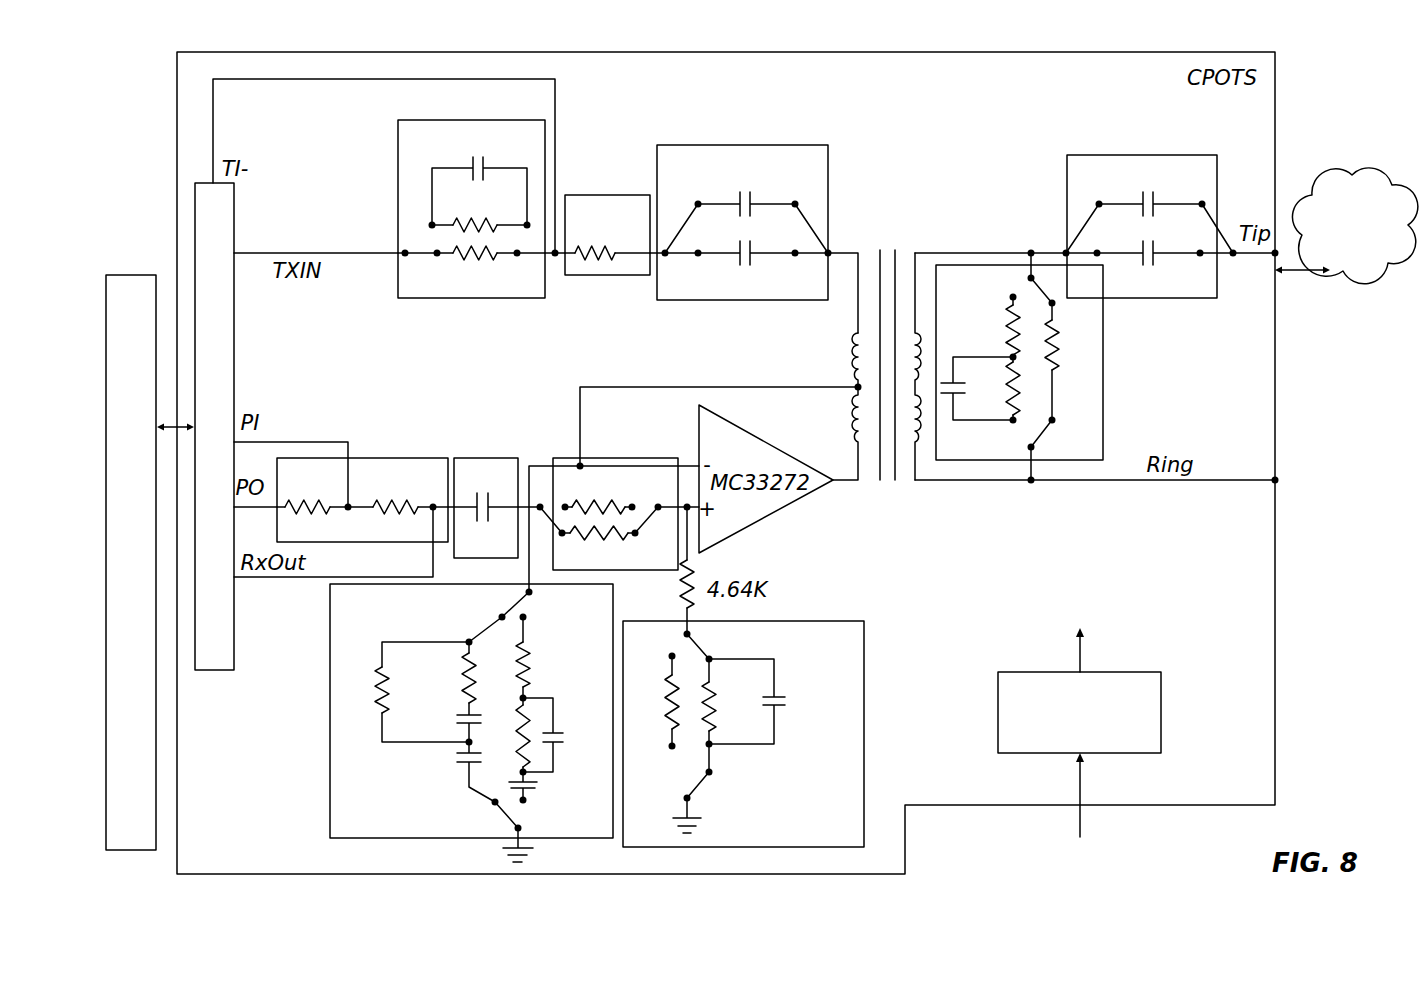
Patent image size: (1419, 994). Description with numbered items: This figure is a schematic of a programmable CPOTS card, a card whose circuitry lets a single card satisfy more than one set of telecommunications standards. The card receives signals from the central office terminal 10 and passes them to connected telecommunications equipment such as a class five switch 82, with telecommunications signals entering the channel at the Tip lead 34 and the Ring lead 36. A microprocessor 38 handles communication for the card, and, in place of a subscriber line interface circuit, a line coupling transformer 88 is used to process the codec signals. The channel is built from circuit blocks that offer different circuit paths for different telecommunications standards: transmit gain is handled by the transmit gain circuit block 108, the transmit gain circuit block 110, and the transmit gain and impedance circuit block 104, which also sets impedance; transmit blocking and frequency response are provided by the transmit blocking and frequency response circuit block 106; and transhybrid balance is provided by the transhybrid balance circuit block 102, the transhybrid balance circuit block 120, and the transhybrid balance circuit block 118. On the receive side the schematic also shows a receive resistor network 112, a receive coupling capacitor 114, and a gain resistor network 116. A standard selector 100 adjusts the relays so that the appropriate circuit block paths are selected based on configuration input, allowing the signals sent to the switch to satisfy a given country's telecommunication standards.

The central office terminal 10 is at (128, 275).
The Tip lead 34 is at (1275, 265).
The Ring lead 36 is at (1276, 482).
The microprocessor 38 is at (199, 182).
The class 5 switch 82 is at (1375, 163).
The line coupling transformer 88 is at (890, 248).
The standard selector 100 is at (1135, 672).
The transhybrid balance circuit block 102 is at (1148, 155).
The transmit gain and impedance circuit block 104 is at (1103, 365).
The transmit blocking and frequency response circuit block 106 is at (758, 145).
The transmit gain circuit block 108 is at (620, 195).
The transmit gain circuit block 110 is at (467, 120).
The receive resistor network 112 is at (393, 458).
The receive coupling capacitor 114 is at (477, 458).
The gain resistor network 116 is at (623, 458).
The transhybrid balance circuit block 118 is at (810, 621).
The transhybrid balance circuit block 120 is at (330, 688).